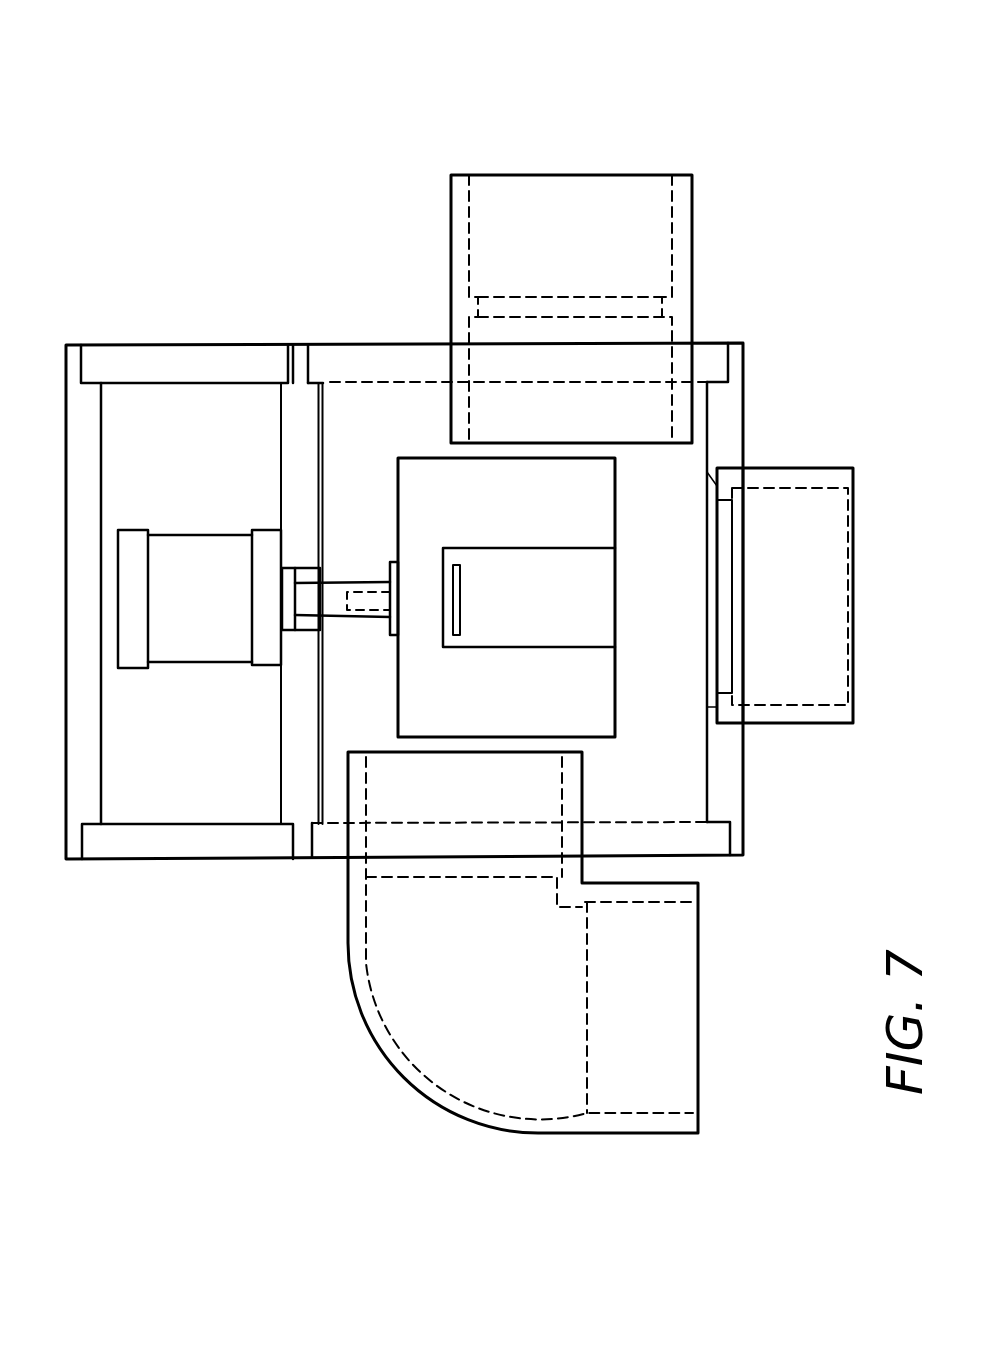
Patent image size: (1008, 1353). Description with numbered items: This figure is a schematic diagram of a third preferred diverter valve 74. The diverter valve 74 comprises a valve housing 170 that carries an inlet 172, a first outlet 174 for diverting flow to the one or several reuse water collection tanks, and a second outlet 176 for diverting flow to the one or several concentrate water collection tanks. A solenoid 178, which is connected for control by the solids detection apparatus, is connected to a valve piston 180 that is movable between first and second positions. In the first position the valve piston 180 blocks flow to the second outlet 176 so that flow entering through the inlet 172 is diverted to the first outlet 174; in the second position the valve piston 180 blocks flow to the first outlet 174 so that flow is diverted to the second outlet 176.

The diverter valve 74 is at (295, 162).
The valve housing 170 is at (338, 857).
The inlet 172 is at (457, 228).
The first outlet 174 is at (433, 1103).
The second outlet 176 is at (808, 473).
The solenoid 178 is at (210, 667).
The valve piston 180 is at (596, 688).